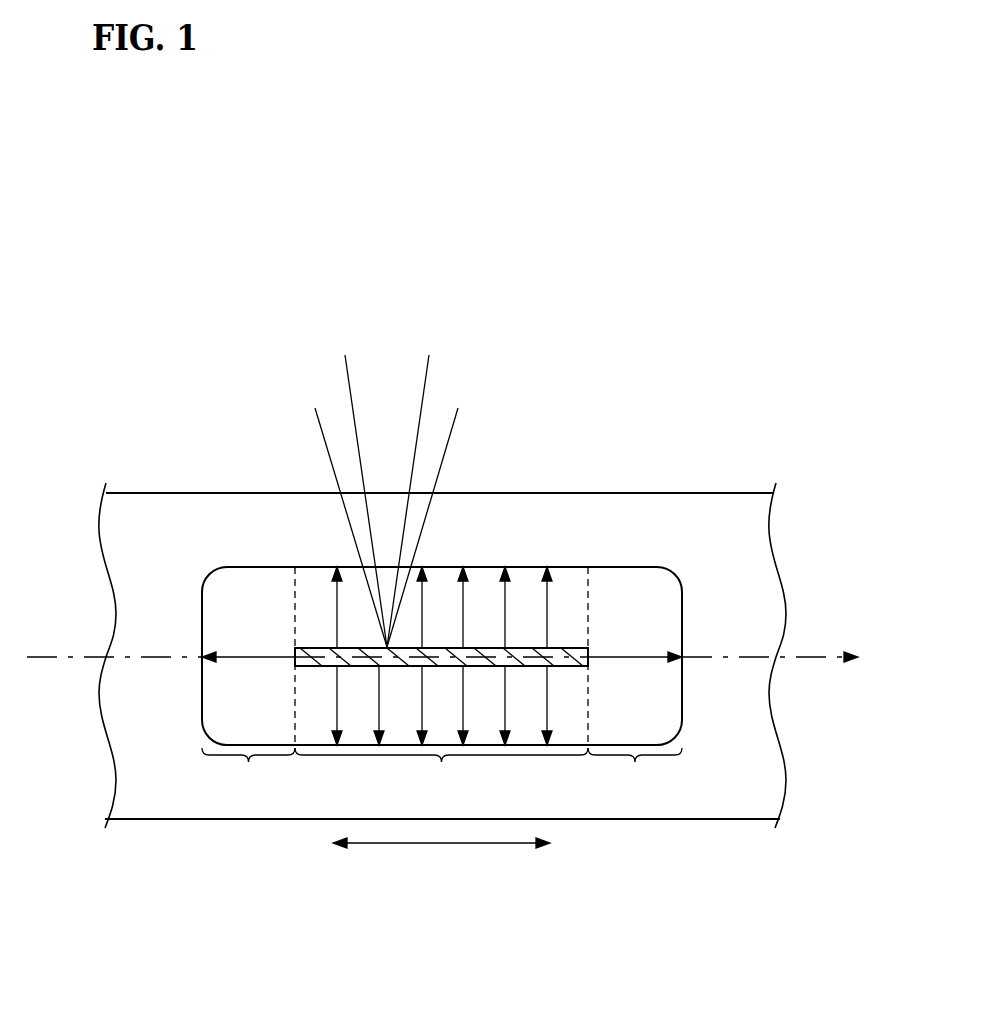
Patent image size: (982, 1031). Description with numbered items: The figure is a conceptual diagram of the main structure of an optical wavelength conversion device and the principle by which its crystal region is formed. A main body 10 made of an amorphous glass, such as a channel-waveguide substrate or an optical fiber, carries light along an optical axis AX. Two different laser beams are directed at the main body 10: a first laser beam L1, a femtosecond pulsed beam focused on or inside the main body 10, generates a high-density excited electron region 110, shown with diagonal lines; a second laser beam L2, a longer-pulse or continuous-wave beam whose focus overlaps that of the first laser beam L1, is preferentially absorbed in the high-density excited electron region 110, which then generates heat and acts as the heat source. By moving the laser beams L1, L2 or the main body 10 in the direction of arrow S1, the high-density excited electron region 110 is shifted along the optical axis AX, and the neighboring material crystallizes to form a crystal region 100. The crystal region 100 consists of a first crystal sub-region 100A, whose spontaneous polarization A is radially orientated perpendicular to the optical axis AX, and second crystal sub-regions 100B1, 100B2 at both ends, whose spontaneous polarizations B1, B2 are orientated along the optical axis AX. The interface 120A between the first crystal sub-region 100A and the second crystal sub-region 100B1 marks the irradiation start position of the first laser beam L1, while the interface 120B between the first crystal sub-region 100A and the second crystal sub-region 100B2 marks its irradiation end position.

The main body 10 is at (677, 493).
The crystal region 100 is at (627, 567).
The high-density excited electron region 110 is at (580, 652).
The interface 120A is at (293, 555).
The interface 120B is at (586, 555).
The spontaneous polarization A is at (506, 605).
The first laser beam L1 is at (427, 373).
The second laser beam L2 is at (455, 420).
The optical axis AX is at (461, 656).
The spontaneous polarization B1 is at (248, 659).
The spontaneous polarization B2 is at (628, 659).
The second crystal sub-region 100B1 is at (248, 769).
The first crystal sub-region 100A is at (441, 769).
The second crystal sub-region 100B2 is at (635, 769).
The arrow S1 is at (441, 843).